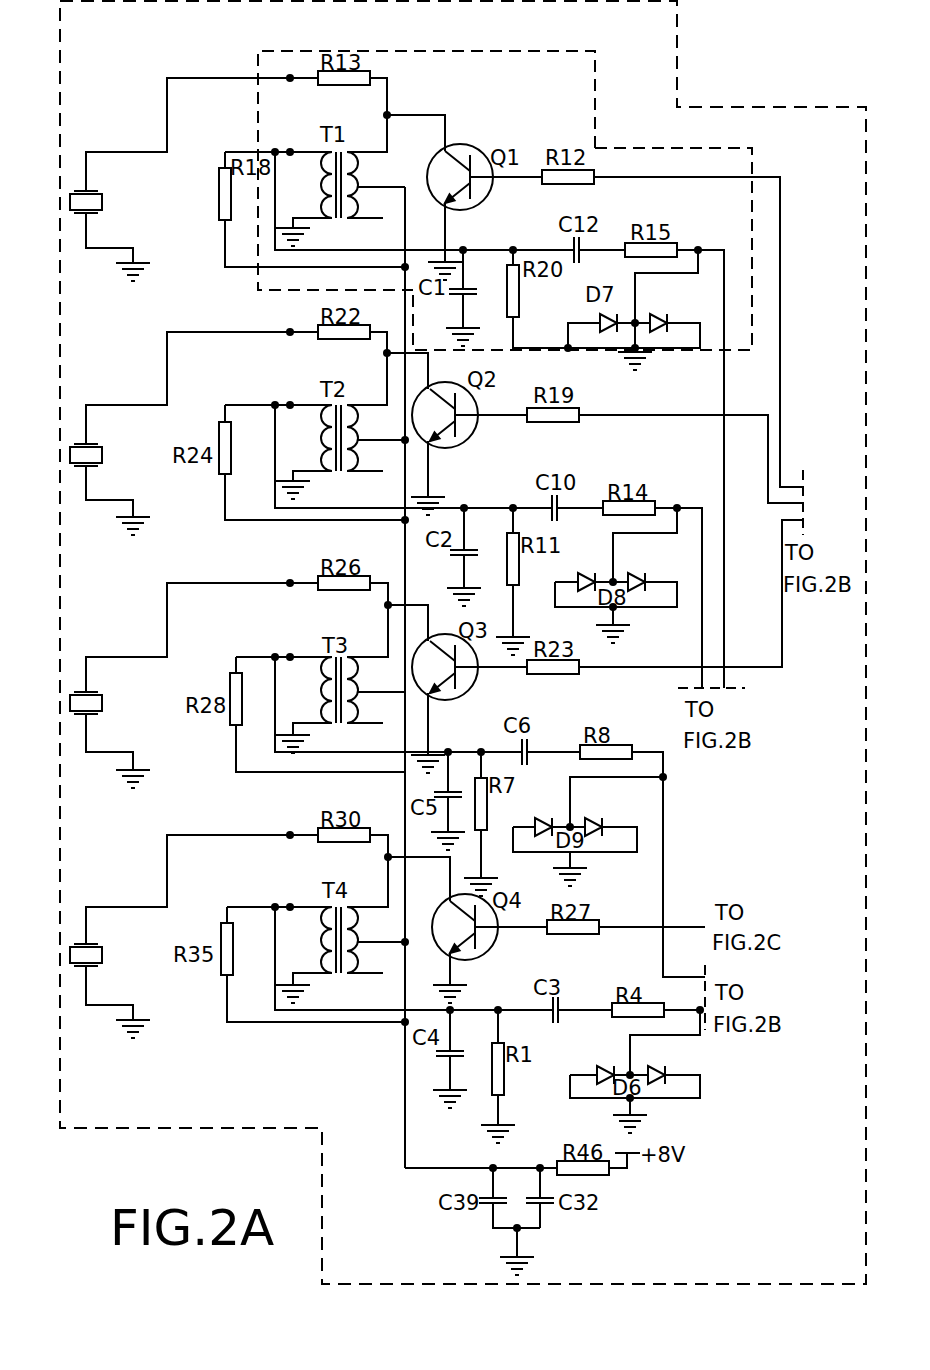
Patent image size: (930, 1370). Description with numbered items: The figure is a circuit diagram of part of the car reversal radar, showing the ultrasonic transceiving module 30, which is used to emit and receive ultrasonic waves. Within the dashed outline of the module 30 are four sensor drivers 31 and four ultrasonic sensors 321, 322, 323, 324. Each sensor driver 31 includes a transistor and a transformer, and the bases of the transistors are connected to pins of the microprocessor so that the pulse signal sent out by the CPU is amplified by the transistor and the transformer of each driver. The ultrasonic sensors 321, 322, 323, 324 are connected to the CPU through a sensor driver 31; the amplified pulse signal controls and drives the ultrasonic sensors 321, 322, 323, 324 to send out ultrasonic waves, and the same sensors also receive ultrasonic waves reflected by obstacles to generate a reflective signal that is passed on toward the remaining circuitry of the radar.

The ultrasonic transceiving module 30 is at (350, 1).
The sensor driver 31 is at (725, 227).
The ultrasonic sensor 321 is at (194, 179).
The ultrasonic sensor 322 is at (194, 433).
The ultrasonic sensor 323 is at (194, 685).
The ultrasonic sensor 324 is at (194, 936).